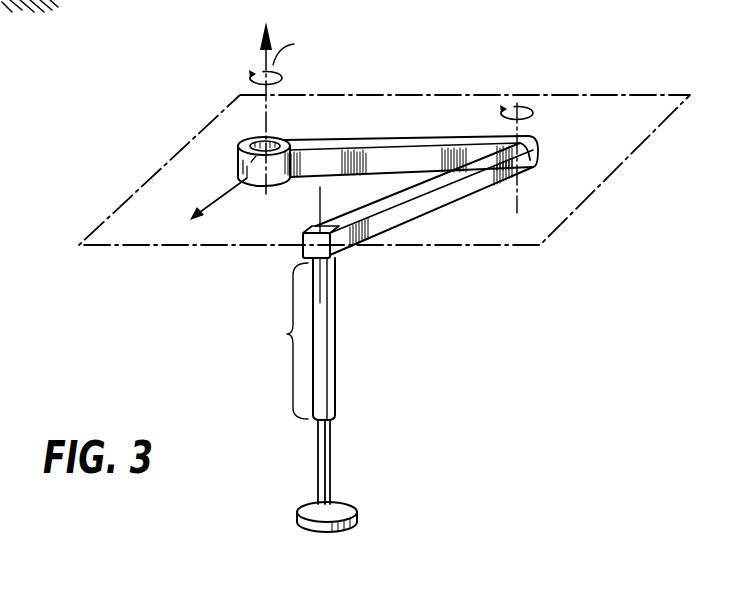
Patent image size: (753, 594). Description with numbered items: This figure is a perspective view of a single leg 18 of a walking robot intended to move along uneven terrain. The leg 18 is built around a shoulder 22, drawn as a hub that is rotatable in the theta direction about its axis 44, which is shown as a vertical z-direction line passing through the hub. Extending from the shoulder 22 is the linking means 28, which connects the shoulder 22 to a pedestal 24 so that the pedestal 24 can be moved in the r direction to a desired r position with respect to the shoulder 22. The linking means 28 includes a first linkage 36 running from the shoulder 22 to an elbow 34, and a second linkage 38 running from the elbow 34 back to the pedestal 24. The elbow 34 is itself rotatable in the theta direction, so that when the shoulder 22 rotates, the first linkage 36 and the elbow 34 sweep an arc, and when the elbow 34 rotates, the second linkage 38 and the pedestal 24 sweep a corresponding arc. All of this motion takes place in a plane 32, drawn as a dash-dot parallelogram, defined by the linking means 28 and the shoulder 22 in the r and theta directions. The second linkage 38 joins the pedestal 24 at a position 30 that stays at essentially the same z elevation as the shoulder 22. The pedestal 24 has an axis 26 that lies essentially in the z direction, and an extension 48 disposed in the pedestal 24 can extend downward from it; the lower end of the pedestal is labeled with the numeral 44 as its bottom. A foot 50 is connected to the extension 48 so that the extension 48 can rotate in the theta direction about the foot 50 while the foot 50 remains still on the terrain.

The leg 18 is at (225, 306).
The shoulder 22 is at (298, 131).
The pedestal 24 is at (287, 339).
The axis 26 is at (317, 207).
The linking means 28 is at (464, 114).
The position 30 is at (330, 258).
The plane 32 is at (563, 225).
The elbow 34 is at (528, 137).
The first linkage 36 is at (415, 117).
The second linkage 38 is at (432, 200).
The axis 44 is at (263, 120).
The extension 48 is at (331, 455).
The foot 50 is at (313, 503).